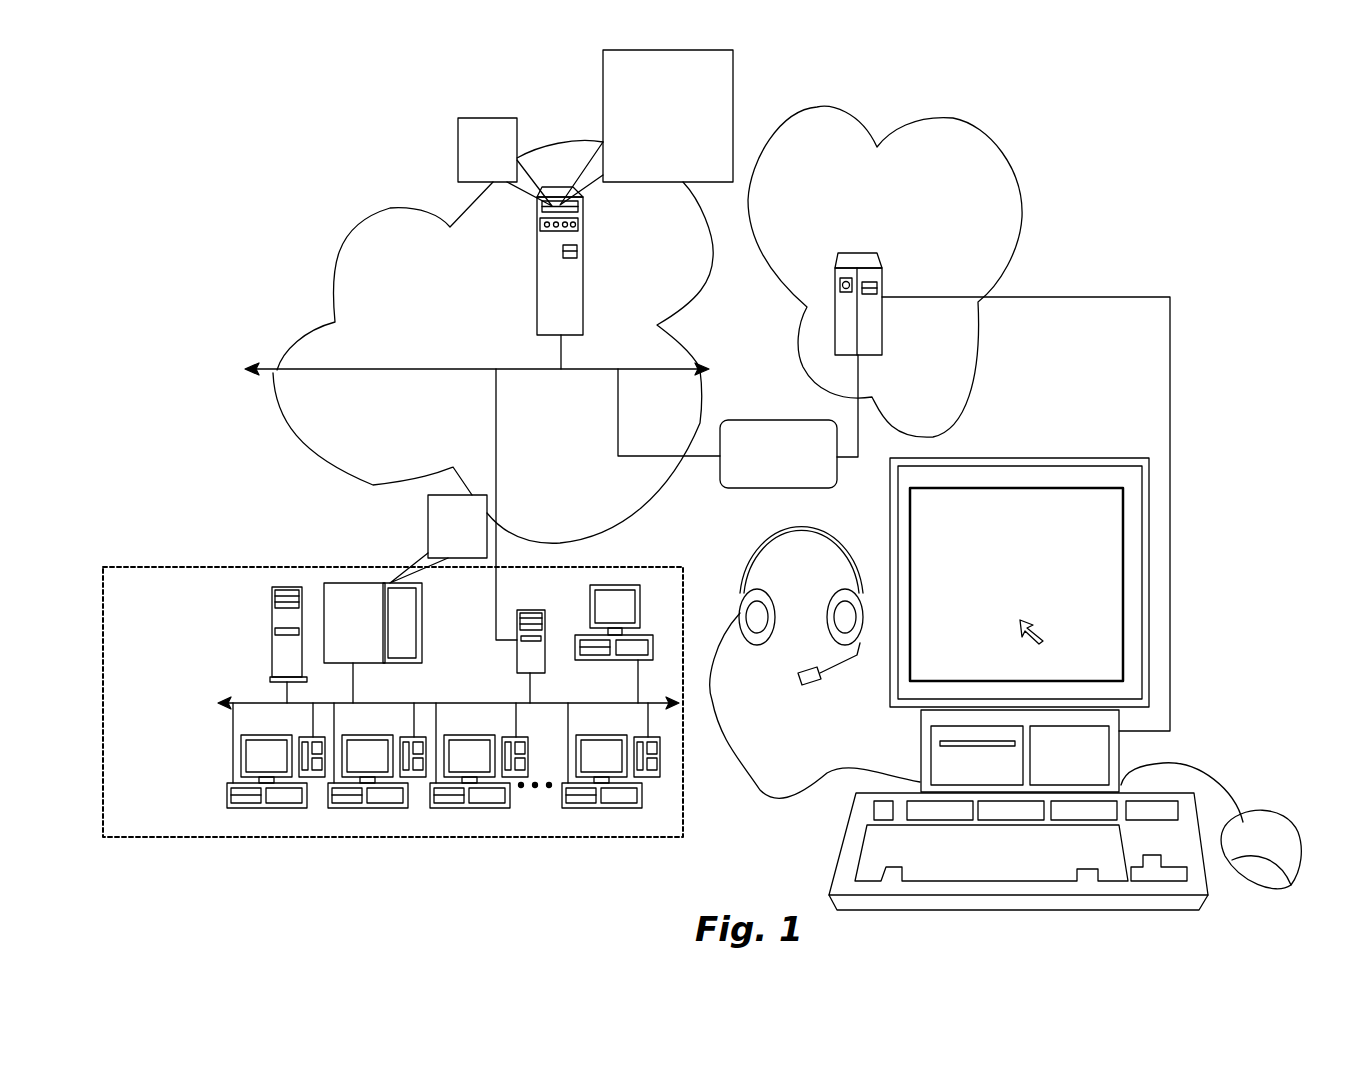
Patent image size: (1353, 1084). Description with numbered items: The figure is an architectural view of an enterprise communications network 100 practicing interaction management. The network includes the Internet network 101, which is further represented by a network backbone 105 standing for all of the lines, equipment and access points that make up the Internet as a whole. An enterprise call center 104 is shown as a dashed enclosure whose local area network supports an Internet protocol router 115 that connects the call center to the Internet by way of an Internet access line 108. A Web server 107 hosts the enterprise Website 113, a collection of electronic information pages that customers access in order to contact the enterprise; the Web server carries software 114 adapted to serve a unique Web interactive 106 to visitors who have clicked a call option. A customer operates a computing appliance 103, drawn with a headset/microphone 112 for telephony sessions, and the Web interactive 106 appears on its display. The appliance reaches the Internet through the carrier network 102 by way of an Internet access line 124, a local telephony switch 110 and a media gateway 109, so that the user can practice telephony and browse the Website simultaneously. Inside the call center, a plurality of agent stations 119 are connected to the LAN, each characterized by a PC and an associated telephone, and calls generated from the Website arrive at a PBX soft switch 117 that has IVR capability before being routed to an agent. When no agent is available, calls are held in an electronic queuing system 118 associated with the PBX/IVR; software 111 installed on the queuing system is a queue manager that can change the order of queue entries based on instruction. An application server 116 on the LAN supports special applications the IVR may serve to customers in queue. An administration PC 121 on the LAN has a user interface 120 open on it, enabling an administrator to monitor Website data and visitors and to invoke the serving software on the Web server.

The enterprise communications network 100 is at (1137, 150).
The Internet network 101 is at (333, 322).
The carrier network 102 is at (877, 147).
The computing appliance 103 is at (1150, 537).
The enterprise call center 104 is at (208, 562).
The network backbone 105 is at (425, 370).
The Web interactive 106 is at (912, 660).
The Web server 107 is at (537, 257).
The Internet access line 108 is at (496, 447).
The media gateway 109 is at (780, 420).
The local telephony switch 110 is at (882, 313).
The software 111 is at (428, 542).
The headset/microphone 112 is at (840, 533).
The enterprise Website 113 is at (603, 122).
The software 114 is at (458, 167).
The Internet protocol router 115 is at (517, 657).
The application server 116 is at (272, 635).
The PBX soft switch 117 is at (355, 583).
The electronic queuing system 118 is at (422, 623).
The agent stations 119 is at (210, 779).
The user interface 120 is at (590, 613).
The administration PC 121 is at (623, 660).
The Internet access line 124 is at (1168, 372).